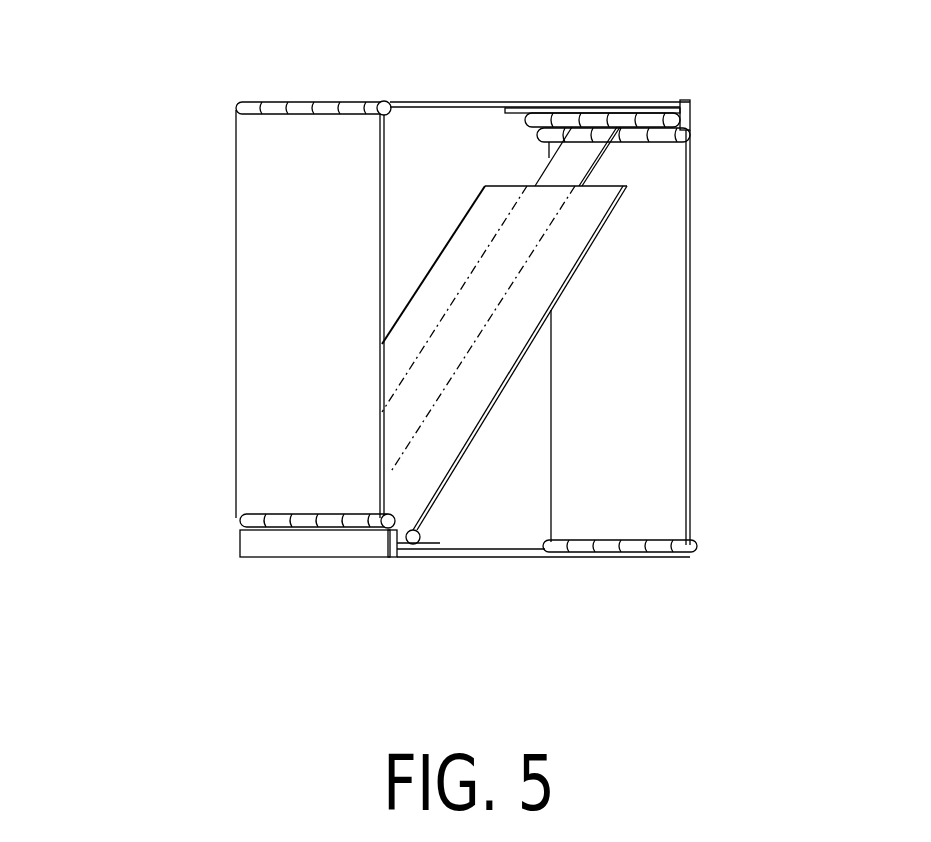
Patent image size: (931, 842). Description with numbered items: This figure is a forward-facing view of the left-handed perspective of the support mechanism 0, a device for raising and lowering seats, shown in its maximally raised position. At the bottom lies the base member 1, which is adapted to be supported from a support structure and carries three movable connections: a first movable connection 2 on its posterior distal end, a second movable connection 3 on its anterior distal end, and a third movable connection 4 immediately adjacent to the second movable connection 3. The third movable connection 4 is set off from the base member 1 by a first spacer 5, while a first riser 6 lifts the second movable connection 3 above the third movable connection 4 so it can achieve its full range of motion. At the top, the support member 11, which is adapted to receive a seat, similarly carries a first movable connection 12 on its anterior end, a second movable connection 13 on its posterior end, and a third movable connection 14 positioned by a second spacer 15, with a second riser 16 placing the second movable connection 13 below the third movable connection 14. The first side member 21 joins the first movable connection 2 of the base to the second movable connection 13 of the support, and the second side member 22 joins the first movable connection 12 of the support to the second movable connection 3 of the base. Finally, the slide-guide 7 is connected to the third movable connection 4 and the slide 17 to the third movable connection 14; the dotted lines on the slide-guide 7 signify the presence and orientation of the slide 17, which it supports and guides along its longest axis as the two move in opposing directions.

The support mechanism 0 is at (133, 340).
The base member 1 is at (503, 562).
The first movable connection 2 is at (702, 553).
The second movable connection 3 is at (233, 521).
The third movable connection 4 is at (421, 531).
The first spacer 5 is at (444, 546).
The first riser 6 is at (286, 562).
The slide-guide 7 is at (464, 236).
The support member 11 is at (491, 98).
The first movable connection 12 is at (229, 103).
The second movable connection 13 is at (694, 136).
The third movable connection 14 is at (536, 121).
The second spacer 15 is at (508, 113).
The second riser 16 is at (694, 112).
The slide 17 is at (582, 158).
The first side member 21 is at (694, 325).
The second side member 22 is at (270, 300).